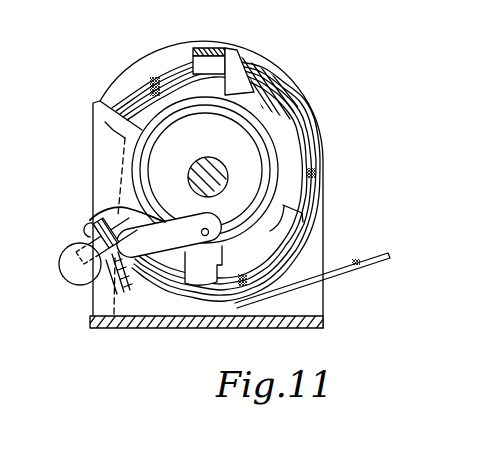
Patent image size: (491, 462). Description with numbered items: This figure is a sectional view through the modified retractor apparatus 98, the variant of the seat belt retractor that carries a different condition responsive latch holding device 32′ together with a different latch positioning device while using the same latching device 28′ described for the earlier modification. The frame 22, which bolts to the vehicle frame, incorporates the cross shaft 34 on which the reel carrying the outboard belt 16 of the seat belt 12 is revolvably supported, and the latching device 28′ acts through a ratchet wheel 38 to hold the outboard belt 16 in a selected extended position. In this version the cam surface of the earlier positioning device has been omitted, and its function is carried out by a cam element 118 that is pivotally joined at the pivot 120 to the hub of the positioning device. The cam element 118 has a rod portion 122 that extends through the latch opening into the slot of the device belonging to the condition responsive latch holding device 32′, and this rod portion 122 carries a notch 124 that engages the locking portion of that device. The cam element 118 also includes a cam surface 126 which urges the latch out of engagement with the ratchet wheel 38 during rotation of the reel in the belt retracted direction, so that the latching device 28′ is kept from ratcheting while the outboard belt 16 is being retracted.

The retractor apparatus 98 is at (130, 65).
The ratchet wheel 38 is at (303, 134).
The cross shaft 34 is at (229, 147).
The seat belt 12 is at (199, 213).
The pivotal joint 120 is at (170, 226).
The cam surface 126 is at (93, 225).
The condition responsive latch holding device 32′ is at (68, 288).
The rod portion 122 is at (82, 278).
The notch 124 is at (113, 305).
The latching device 28′ is at (118, 284).
The cam element 118 is at (180, 256).
The frame 22 is at (311, 321).
The outboard belt 16 is at (351, 261).